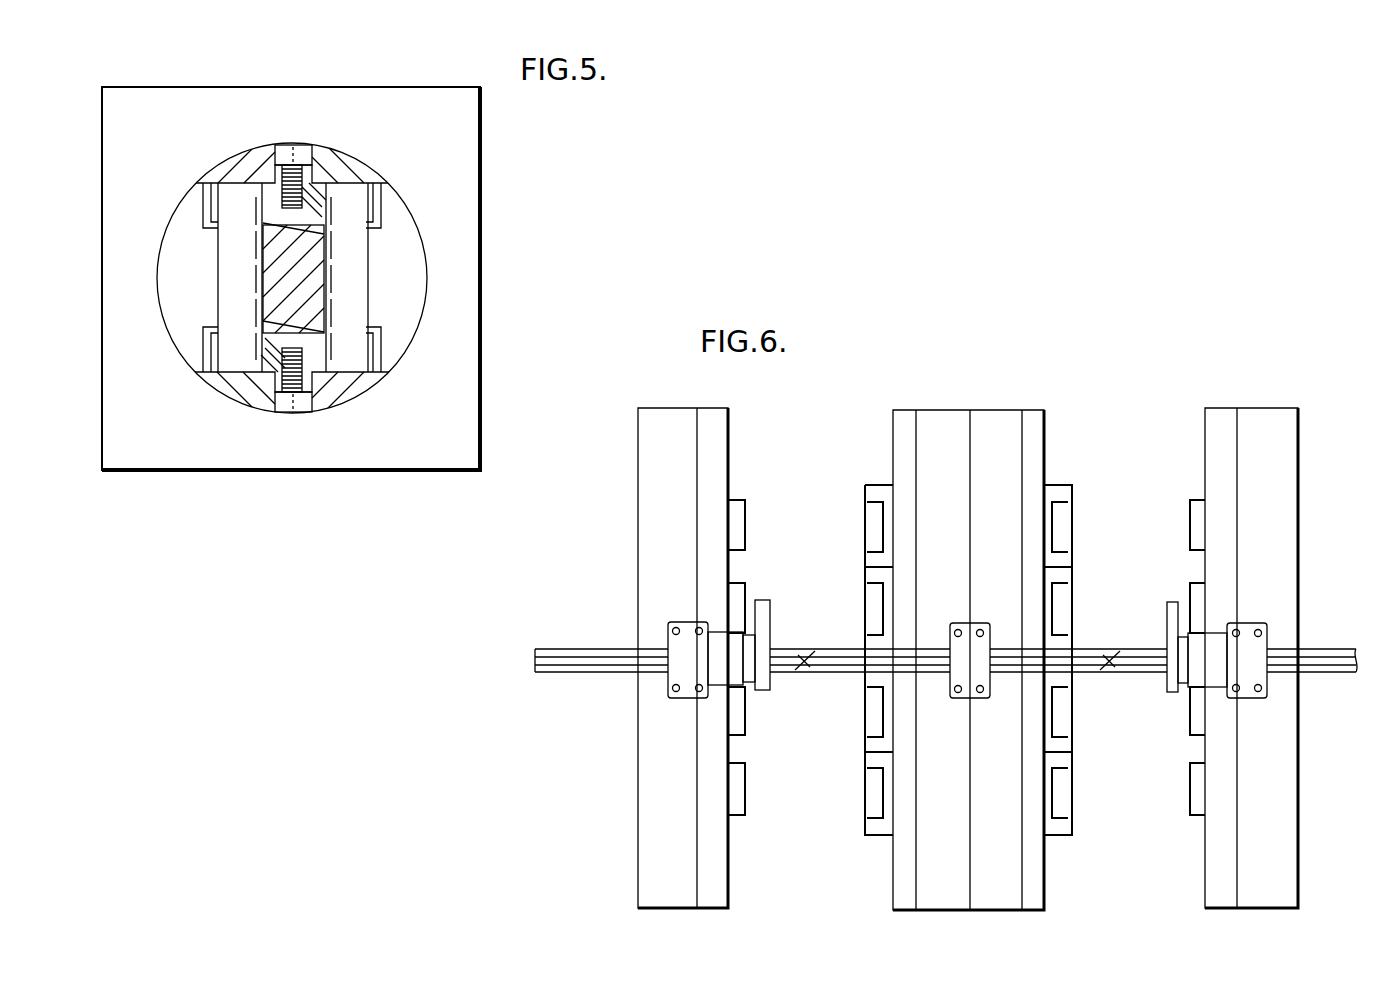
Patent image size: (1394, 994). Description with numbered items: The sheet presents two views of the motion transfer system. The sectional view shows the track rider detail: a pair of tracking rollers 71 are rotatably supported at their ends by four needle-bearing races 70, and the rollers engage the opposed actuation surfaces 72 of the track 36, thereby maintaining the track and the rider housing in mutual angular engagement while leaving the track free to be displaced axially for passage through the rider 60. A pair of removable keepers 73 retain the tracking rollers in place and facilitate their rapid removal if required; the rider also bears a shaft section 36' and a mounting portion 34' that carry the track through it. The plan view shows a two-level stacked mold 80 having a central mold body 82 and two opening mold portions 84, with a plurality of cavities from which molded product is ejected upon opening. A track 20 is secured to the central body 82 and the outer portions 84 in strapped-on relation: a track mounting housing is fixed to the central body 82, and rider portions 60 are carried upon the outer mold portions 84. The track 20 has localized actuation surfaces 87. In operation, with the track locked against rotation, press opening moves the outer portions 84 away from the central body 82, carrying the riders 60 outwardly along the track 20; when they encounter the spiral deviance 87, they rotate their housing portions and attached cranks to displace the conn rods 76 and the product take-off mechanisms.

In FIG. 5, the needle bearings 70 is at (206, 202).
In FIG. 5, the tracking rollers 71 is at (372, 263).
In FIG. 5, the actuation surfaces 72 is at (330, 300).
In FIG. 5, the removable keepers 73 is at (332, 150).
In FIG. 5, the track 36 is at (246, 277).
In FIG. 6, the two-level stacked mold 80 is at (1062, 330).
In FIG. 6, the central mold body 82 is at (942, 405).
In FIG. 6, the opening mold portions 84 is at (670, 407).
In FIG. 6, the drive shaft section 36' is at (601, 613).
In FIG. 6, the track rider 60 is at (685, 622).
In FIG. 6, the localized actuation surfaces 87 is at (800, 660).
In FIG. 6, the bearing block 34' is at (984, 624).
In FIG. 6, the connecting rod 76 is at (1172, 602).
In FIG. 6, the track 20 is at (1330, 648).